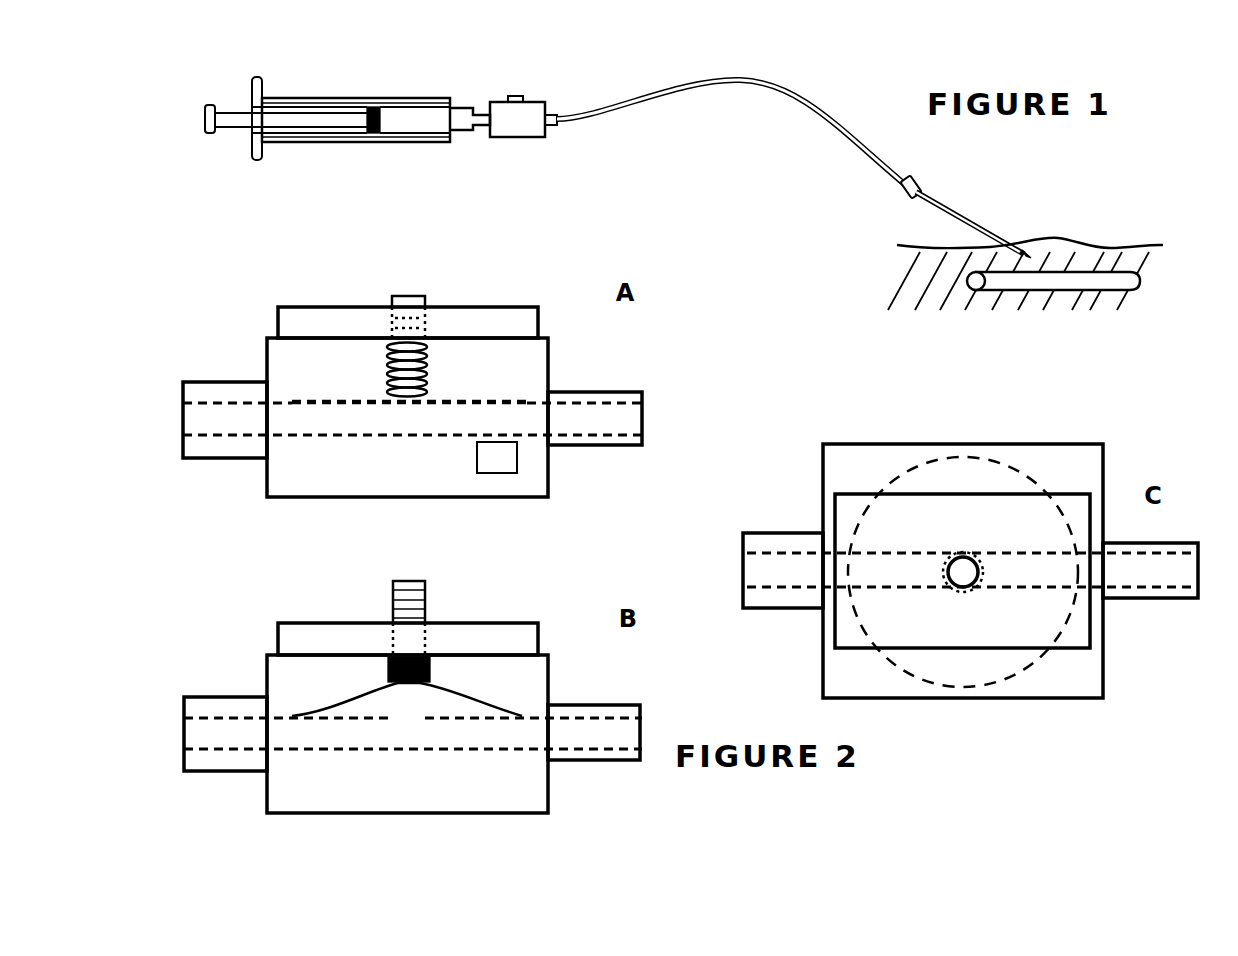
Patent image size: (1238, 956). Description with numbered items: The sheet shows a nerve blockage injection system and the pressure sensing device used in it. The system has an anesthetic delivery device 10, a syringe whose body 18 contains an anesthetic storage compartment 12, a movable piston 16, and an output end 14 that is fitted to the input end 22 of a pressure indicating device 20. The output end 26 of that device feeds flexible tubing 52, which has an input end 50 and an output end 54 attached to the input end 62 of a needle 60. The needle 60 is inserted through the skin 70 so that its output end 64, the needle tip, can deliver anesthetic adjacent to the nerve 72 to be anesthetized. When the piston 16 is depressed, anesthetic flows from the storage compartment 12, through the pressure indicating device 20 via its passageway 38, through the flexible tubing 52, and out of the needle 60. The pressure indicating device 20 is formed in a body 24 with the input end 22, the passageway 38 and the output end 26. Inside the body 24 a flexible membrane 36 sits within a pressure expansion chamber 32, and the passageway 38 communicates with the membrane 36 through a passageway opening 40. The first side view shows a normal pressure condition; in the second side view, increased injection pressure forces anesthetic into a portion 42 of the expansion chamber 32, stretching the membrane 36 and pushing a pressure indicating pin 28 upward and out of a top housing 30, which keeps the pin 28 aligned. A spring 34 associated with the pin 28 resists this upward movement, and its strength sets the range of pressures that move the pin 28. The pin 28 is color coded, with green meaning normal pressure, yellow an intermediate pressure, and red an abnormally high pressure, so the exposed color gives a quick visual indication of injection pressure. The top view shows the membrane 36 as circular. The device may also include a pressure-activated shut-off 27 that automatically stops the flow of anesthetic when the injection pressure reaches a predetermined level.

In FIG. 1, the anesthetic delivery device 10 is at (332, 72).
In FIG. 1, the anesthetic storage compartment 12 is at (408, 117).
In FIG. 1, the output end 14 is at (467, 130).
In FIG. 1, the movable piston 16 is at (228, 128).
In FIG. 1, the body 18 is at (383, 142).
In FIG. 1, the pressure indicating device 20 is at (501, 82).
In FIG. 2, the pressure indicating device 20 is at (190, 350).
In FIG. 1, the input end 22 is at (483, 127).
In FIG. 2, the input end 22 is at (240, 458).
In FIG. 1, the body 24 is at (512, 137).
In FIG. 2, the body 24 is at (552, 367).
In FIG. 1, the output end 26 is at (550, 125).
In FIG. 2, the output end 26 is at (603, 445).
In FIG. 2, the pressure-activated shut-off 27 is at (497, 457).
In FIG. 1, the pressure indicating pin 28 is at (515, 96).
In FIG. 2, the pressure indicating pin 28 is at (408, 295).
In FIG. 2, the top housing 30 is at (522, 307).
In FIG. 2, the pressure expansion chamber 32 is at (498, 368).
In FIG. 2, the spring 34 is at (387, 372).
In FIG. 2, the flexible membrane 36 is at (457, 403).
In FIG. 2, the passageway 38 is at (320, 437).
In FIG. 2, the passageway opening 40 is at (407, 403).
In FIG. 2, the portion 42 is at (448, 702).
In FIG. 1, the input end 50 is at (565, 115).
In FIG. 1, the flexible tubing 52 is at (690, 100).
In FIG. 1, the output end 54 is at (905, 190).
In FIG. 1, the needle 60 is at (955, 205).
In FIG. 1, the input end 62 is at (918, 182).
In FIG. 1, the output end 64 is at (1031, 250).
In FIG. 1, the skin 70 is at (1055, 238).
In FIG. 1, the nerve 72 is at (1093, 265).